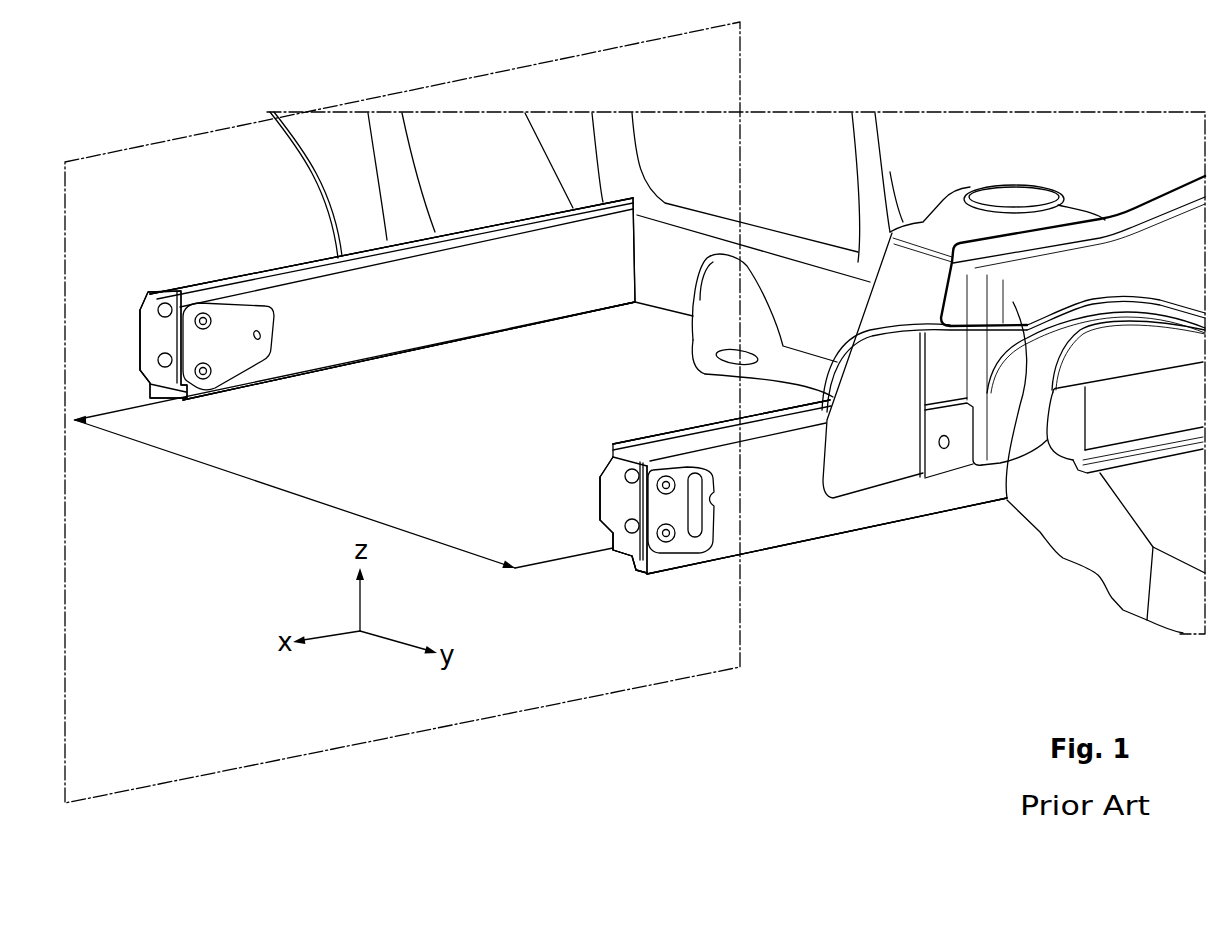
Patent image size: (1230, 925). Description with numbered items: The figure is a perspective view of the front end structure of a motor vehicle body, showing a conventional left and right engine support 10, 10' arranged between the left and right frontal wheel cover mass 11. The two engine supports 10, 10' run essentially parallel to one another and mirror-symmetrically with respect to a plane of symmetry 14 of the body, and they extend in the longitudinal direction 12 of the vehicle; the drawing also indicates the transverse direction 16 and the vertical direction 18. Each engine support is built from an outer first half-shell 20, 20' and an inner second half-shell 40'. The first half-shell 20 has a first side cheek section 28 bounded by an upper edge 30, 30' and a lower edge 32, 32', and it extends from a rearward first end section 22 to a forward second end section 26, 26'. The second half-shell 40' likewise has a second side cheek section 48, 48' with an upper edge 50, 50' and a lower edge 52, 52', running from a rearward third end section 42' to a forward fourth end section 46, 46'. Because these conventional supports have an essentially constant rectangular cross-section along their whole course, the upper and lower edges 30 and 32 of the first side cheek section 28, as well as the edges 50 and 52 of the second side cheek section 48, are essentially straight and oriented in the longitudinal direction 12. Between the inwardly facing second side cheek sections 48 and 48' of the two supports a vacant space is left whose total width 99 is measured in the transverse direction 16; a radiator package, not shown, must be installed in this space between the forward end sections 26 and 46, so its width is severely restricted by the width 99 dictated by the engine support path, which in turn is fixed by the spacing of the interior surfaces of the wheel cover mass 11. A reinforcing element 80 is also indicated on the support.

The engine support 10 is at (803, 541).
The engine support 10' is at (387, 281).
The wheel cover mass 11 is at (1007, 498).
The longitudinal direction (x-direction) 12 is at (332, 638).
The plane of symmetry 14 is at (169, 746).
The transverse direction (y-direction) 16 is at (387, 642).
The vertical direction (z-direction) 18 is at (363, 602).
The first half-shell 20 is at (810, 488).
The first half-shell 20' is at (163, 298).
The first end section 22 is at (1060, 447).
The second end section 26 is at (691, 557).
The second end section 26' is at (173, 343).
The first side cheek section 28 is at (777, 517).
The upper edge 30 is at (722, 416).
The upper edge 30' is at (391, 248).
The lower edge 32 is at (637, 602).
The lower edge 32' is at (183, 409).
The second half-shell 40' is at (392, 299).
The third end section 42' is at (619, 281).
The fourth end section 46 is at (584, 511).
The fourth end section 46' is at (187, 403).
The second side cheek section 48 is at (595, 515).
The second side cheek section 48' is at (409, 355).
The upper edge 50 is at (707, 420).
The prior art web 50' is at (406, 273).
The lower edge 52 is at (608, 576).
The prior art lower edge 52' is at (355, 367).
The reinforcing element 80 is at (693, 543).
The space width 99 is at (313, 497).